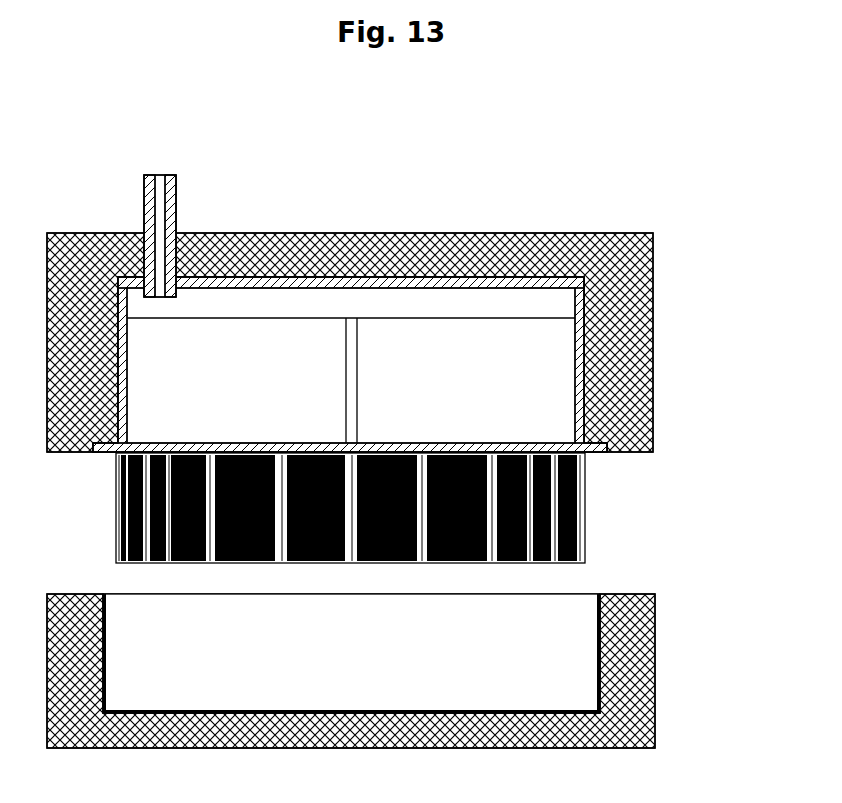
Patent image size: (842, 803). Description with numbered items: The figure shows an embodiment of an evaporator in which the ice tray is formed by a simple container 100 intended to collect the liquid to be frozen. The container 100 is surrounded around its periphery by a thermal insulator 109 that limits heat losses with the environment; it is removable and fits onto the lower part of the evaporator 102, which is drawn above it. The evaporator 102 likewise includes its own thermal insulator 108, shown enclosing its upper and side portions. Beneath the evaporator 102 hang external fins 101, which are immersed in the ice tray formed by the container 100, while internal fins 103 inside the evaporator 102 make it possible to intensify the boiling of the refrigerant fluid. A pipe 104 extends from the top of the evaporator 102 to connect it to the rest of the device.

The container 100 is at (500, 660).
The external fins 101 is at (502, 518).
The evaporator 102 is at (476, 304).
The internal fins 103 is at (512, 405).
The pipe 104 is at (158, 195).
The thermal insulator 108 is at (353, 250).
The thermal insulator 109 is at (626, 602).